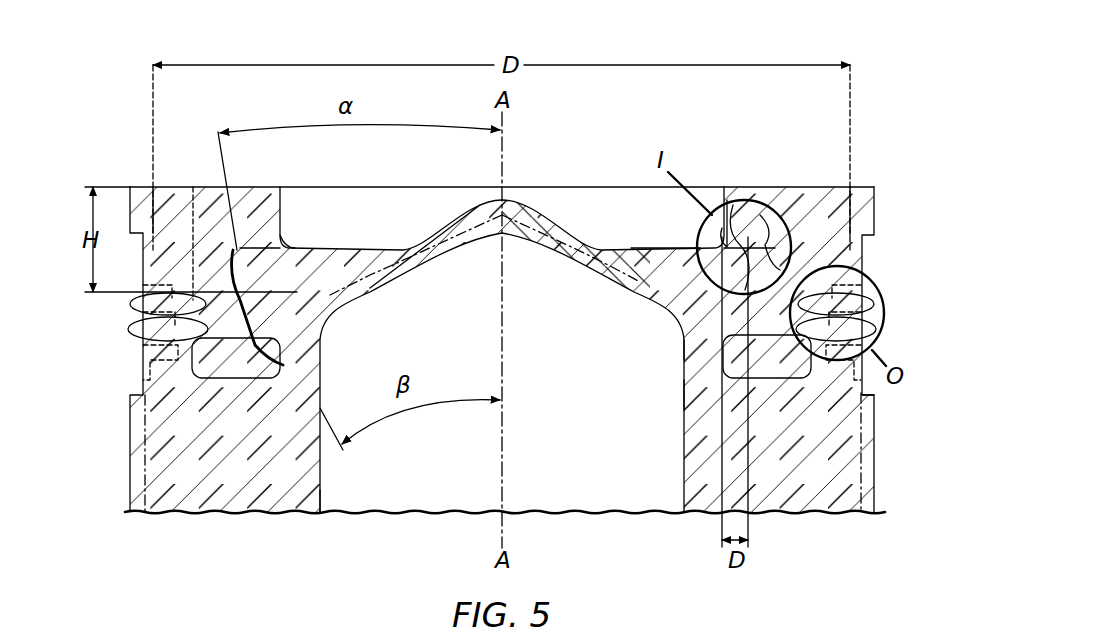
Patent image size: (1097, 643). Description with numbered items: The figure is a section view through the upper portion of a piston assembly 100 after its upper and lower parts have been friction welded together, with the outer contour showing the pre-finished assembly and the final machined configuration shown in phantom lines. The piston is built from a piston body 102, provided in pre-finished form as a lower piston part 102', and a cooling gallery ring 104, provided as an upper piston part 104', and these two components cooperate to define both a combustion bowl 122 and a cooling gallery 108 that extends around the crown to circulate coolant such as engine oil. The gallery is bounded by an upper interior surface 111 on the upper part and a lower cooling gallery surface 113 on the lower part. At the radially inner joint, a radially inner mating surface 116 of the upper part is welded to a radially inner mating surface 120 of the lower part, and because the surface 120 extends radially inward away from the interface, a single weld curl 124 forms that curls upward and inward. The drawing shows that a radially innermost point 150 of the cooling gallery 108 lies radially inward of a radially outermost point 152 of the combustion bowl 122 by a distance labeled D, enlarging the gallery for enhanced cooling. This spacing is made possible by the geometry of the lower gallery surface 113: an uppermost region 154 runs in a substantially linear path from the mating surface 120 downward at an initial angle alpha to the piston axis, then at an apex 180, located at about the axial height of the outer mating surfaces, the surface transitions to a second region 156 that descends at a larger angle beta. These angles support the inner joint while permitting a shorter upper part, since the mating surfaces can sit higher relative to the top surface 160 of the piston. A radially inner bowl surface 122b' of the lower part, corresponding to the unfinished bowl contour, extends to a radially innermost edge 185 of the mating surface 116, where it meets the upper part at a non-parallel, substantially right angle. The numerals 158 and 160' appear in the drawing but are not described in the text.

The piston assembly 100 is at (143, 213).
The piston body 102 is at (889, 416).
The lower piston part 102' is at (904, 456).
The cooling gallery ring 104 is at (877, 177).
The upper piston part 104' is at (902, 192).
The cooling gallery 108 is at (784, 364).
The upper interior surface 111 is at (290, 246).
The lower cooling gallery surface 113 is at (240, 370).
The radially inner mating surface of the upper piston part 116 is at (692, 345).
The radially inner mating surface of the lower piston part 120 is at (668, 247).
The combustion bowl 122 is at (355, 283).
The radially inner bowl surface 122b' is at (571, 213).
The weld curl 124 is at (727, 200).
The radially innermost point of the cooling gallery 150 is at (692, 393).
The radially outermost point of the combustion bowl 152 is at (740, 215).
The uppermost region of the cooling gallery surface 154 is at (193, 187).
The second region of the cooling gallery surface 156 is at (183, 355).
The inner bore 158 is at (320, 488).
The top surface 160 is at (188, 161).
The alternative top land 160' is at (101, 108).
The apex 180 is at (148, 318).
The radially innermost edge of the radially inner mating surface 185 is at (347, 283).